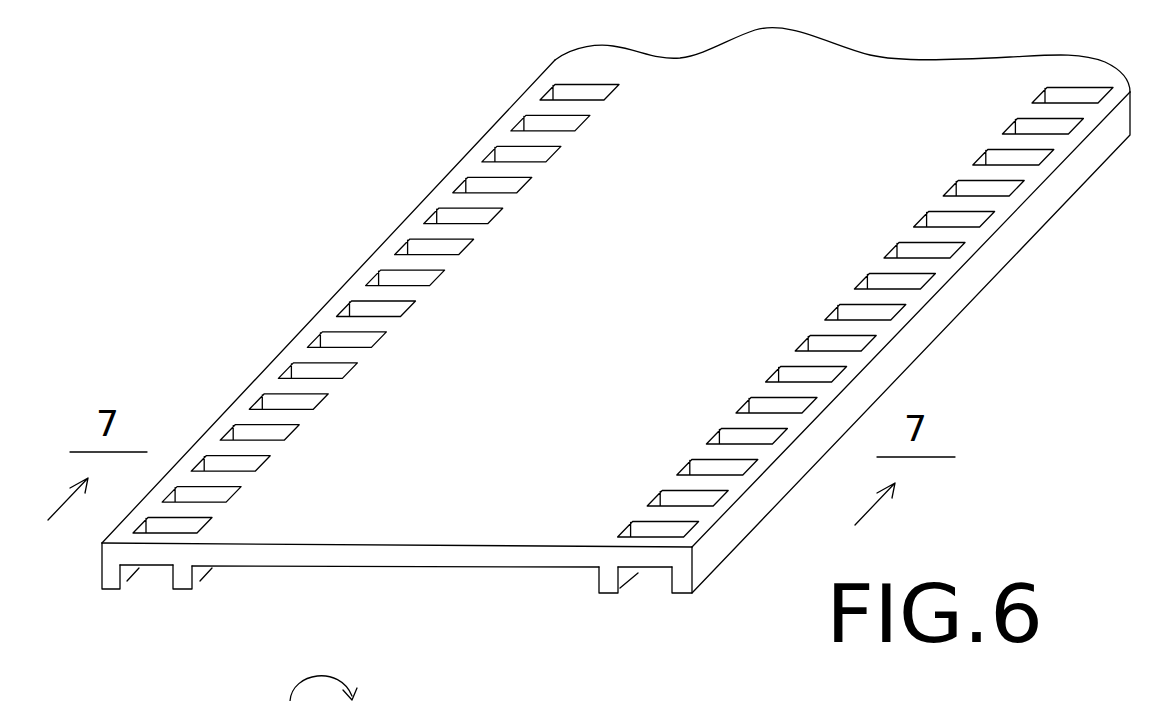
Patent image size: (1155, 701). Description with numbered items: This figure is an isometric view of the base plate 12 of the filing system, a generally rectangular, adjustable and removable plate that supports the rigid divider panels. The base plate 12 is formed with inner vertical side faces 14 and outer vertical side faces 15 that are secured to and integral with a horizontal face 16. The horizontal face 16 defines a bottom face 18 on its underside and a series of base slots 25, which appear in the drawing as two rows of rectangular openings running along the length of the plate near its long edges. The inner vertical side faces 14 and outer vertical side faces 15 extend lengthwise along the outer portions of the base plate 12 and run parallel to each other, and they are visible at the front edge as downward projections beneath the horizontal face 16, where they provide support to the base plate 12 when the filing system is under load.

The base plate 12 is at (471, 99).
The inner vertical side faces 14 is at (197, 596).
The outer vertical side faces 15 is at (103, 595).
The horizontal face 16 is at (358, 517).
The bottom face 18 is at (447, 588).
The base slots 25 is at (310, 372).